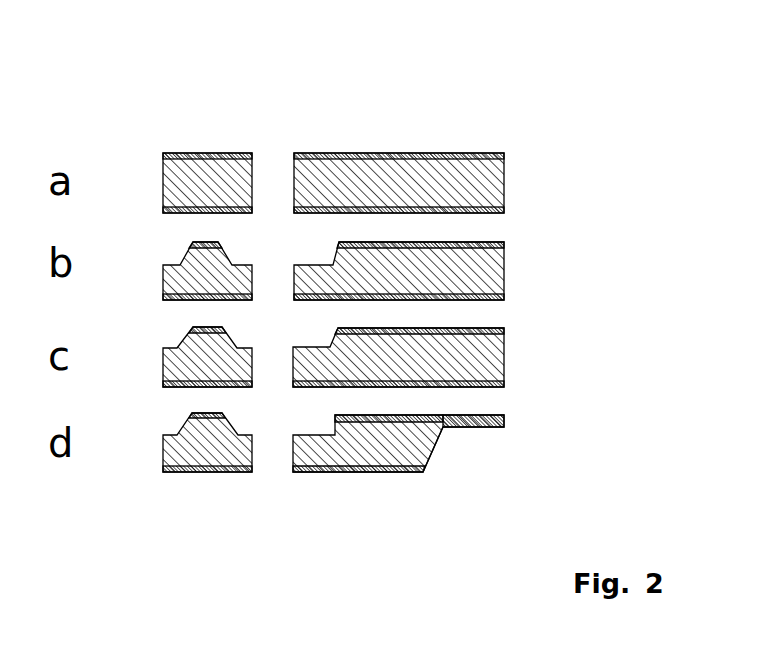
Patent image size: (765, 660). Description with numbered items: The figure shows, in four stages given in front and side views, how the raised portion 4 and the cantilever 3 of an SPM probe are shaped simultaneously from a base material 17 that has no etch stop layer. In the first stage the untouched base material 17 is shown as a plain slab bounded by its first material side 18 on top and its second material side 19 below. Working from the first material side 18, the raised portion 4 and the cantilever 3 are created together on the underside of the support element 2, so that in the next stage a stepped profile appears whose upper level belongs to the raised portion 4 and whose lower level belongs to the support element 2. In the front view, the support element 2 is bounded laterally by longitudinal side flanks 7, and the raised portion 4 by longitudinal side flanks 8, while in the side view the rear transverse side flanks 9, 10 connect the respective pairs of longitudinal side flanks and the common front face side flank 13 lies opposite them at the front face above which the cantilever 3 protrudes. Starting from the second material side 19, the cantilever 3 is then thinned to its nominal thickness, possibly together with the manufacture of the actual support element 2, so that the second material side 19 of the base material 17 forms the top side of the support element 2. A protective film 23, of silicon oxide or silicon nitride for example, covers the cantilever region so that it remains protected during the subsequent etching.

The support element 2 is at (402, 523).
The cantilever 3 is at (489, 433).
The raised portion 4 is at (382, 427).
The longitudinal side flanks 7 is at (169, 220).
The longitudinal side flanks 8 is at (184, 254).
The rear transverse side flank 9 is at (301, 217).
The rear transverse side flank 10 is at (338, 256).
The front face side flank 13 is at (437, 450).
The base material 17 is at (449, 192).
The first material side 18 is at (492, 153).
The second material side 19 is at (484, 221).
The protective film 23 is at (183, 433).